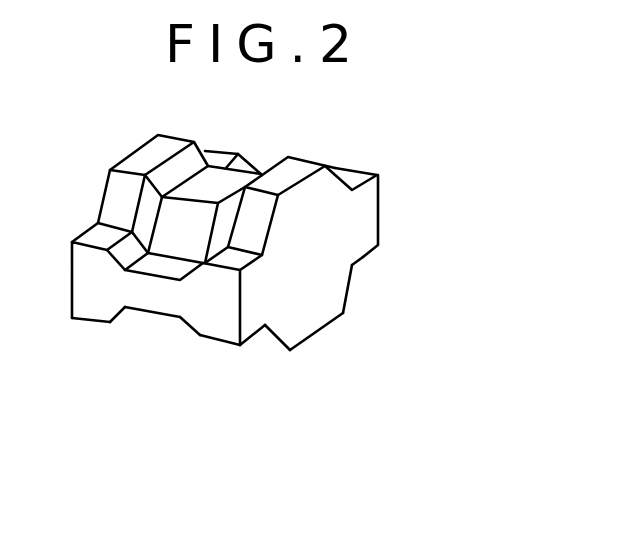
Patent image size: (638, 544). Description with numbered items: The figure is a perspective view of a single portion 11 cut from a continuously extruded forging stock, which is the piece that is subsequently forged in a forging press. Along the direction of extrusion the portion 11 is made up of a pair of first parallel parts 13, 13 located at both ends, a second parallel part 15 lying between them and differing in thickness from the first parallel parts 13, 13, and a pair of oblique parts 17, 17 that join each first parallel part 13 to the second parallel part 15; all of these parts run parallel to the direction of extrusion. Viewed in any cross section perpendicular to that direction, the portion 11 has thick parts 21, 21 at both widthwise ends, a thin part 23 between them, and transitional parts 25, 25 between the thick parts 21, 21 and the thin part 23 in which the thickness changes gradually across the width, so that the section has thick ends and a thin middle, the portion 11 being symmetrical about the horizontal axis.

The portion 11 is at (490, 134).
The first parallel part 13 is at (252, 338).
The second parallel part 15 is at (312, 344).
The oblique part 17 is at (275, 344).
The thick part 21 is at (85, 321).
The thin part 23 is at (155, 316).
The transitional part 25 is at (119, 313).